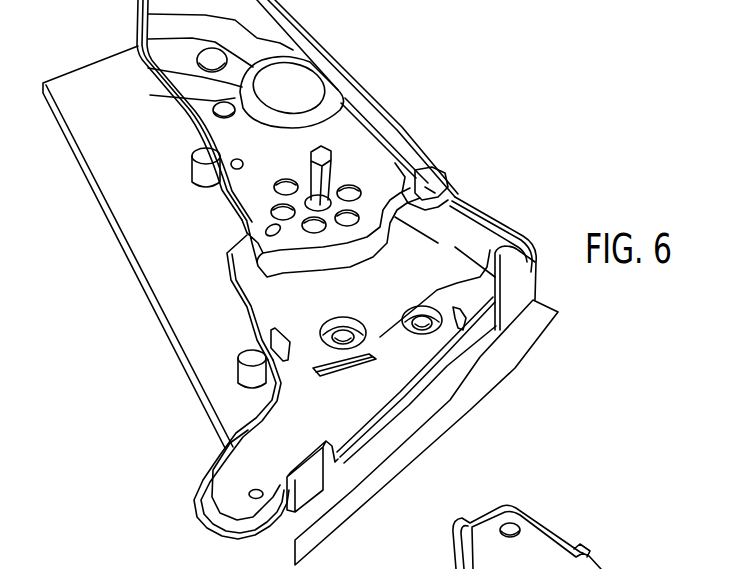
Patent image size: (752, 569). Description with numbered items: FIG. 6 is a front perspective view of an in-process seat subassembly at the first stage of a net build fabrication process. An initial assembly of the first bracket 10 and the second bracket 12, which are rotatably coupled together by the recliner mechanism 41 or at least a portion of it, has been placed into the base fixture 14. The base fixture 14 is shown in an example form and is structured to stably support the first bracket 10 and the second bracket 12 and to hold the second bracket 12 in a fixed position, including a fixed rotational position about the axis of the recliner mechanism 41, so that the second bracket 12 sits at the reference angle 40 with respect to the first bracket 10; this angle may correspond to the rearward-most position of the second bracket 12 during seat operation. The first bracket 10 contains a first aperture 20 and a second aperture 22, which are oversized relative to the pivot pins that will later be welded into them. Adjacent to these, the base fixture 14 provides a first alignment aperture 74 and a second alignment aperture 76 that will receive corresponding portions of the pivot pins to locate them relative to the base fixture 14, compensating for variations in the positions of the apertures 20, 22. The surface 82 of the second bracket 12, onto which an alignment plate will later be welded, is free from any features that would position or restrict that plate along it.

The first bracket 10 is at (482, 237).
The second bracket 12 is at (367, 150).
The base fixture 14 is at (512, 362).
The first aperture 20 is at (340, 326).
The second aperture 22 is at (423, 308).
The reference angle 40 is at (425, 168).
The recliner mechanism 41 is at (310, 163).
The first alignment aperture 74 is at (322, 337).
The second alignment aperture 76 is at (426, 331).
The surface 82 is at (322, 265).